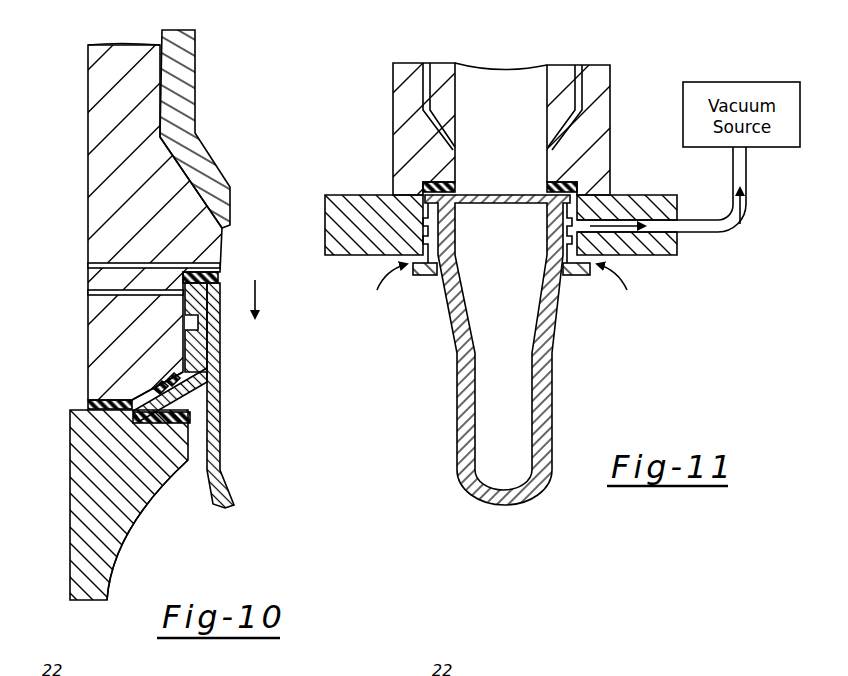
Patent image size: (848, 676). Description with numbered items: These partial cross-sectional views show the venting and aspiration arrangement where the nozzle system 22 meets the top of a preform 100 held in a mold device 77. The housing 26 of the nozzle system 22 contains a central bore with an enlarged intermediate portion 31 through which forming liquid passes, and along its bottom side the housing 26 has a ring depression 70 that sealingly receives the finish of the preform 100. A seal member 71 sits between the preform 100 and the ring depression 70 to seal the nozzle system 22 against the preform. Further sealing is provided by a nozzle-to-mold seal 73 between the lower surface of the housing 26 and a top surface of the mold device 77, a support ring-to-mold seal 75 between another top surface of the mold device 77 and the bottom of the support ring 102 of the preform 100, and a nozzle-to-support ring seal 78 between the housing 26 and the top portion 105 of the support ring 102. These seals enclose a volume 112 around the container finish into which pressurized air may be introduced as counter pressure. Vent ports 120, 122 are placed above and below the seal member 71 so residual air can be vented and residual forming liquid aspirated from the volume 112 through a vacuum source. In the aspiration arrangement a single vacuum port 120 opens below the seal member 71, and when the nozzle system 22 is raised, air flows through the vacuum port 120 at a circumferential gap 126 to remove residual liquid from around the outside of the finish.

In FIG. 11, the nozzle system 22 is at (366, 112).
In FIG. 10, the housing 26 is at (88, 105).
In FIG. 10, the enlarged intermediate portion 31 is at (195, 89).
In FIG. 10, the ring depression 70 is at (162, 330).
In FIG. 10, the seal member 71 is at (218, 279).
In FIG. 11, the seal member 71 is at (546, 186).
In FIG. 10, the nozzle-to-mold seal 73 is at (90, 405).
In FIG. 10, the support ring-to-mold seal 75 is at (133, 417).
In FIG. 10, the mold device 77 is at (117, 571).
In FIG. 10, the nozzle-to-support ring seal 78 is at (165, 385).
In FIG. 10, the preform 100 is at (224, 467).
In FIG. 11, the preform 100 is at (552, 389).
In FIG. 10, the support ring 102 is at (160, 404).
In FIG. 11, the support ring 102 is at (432, 278).
In FIG. 10, the top portion of support ring 105 is at (200, 372).
In FIG. 10, the volume 112 is at (192, 343).
In FIG. 11, the volume 112 is at (572, 208).
In FIG. 10, the vent port 120 is at (88, 265).
In FIG. 11, the vent port 120 is at (667, 225).
In FIG. 10, the vent port 122 is at (88, 292).
In FIG. 11, the circumferential gap 126 is at (578, 278).